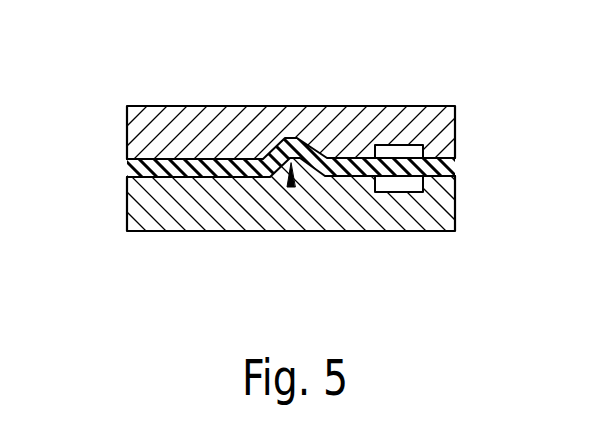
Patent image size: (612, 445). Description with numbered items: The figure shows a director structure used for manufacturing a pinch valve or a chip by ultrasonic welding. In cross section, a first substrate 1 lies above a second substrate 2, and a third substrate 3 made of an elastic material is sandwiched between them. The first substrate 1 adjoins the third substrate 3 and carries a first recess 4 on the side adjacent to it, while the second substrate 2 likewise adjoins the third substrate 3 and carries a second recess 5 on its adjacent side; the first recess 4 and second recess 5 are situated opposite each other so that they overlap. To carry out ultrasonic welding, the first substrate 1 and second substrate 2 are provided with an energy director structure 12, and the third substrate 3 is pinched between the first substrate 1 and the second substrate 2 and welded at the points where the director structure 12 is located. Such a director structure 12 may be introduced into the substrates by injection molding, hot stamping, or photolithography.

The first substrate 1 is at (290, 124).
The second substrate 2 is at (182, 212).
The third substrate 3 is at (195, 160).
The first recess 4 is at (397, 152).
The second recess 5 is at (391, 185).
The director structure 12 is at (291, 187).